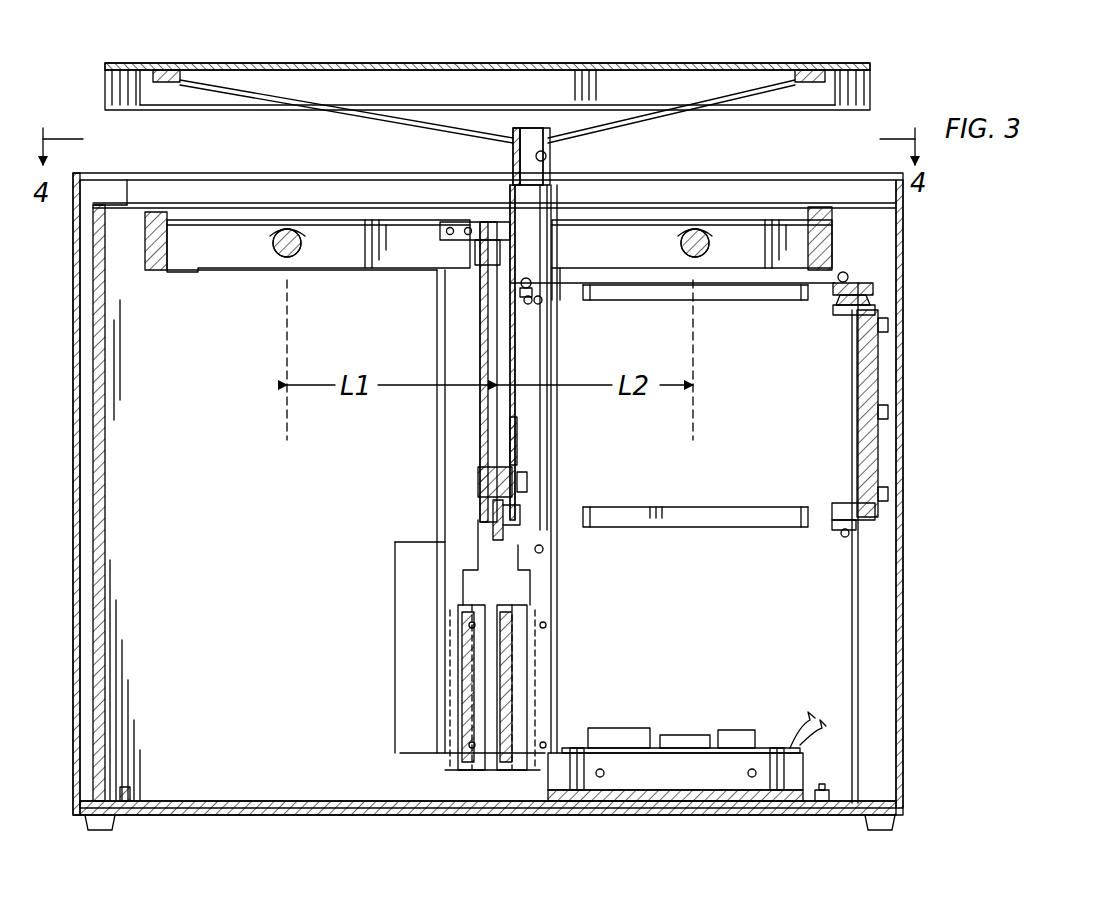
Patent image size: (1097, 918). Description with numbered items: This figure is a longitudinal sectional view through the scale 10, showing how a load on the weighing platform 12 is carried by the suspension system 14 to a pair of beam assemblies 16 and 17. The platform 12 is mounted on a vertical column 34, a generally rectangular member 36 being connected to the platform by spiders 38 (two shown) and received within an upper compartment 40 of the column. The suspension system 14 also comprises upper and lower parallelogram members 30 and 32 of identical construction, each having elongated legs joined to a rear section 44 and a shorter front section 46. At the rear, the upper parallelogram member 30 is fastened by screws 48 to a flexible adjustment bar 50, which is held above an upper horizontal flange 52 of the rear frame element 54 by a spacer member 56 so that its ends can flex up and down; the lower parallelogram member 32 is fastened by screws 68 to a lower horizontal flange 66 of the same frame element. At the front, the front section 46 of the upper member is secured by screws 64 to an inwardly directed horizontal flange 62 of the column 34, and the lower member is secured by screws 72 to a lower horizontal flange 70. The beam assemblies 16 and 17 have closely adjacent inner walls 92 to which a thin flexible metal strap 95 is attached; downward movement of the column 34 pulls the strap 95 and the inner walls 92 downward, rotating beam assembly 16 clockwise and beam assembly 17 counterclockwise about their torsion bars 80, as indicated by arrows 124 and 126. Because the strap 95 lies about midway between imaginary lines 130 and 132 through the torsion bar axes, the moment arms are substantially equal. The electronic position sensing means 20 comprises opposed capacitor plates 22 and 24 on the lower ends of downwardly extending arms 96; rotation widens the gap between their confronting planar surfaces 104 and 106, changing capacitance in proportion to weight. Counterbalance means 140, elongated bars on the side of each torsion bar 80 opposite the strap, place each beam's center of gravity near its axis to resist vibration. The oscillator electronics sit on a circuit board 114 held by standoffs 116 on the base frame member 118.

The scale 10 is at (962, 305).
The weighing platform 12 is at (872, 80).
The suspension system 14 is at (520, 425).
The beam assembly 16 is at (226, 218).
The beam assembly 17 is at (806, 218).
The electronic position sensing means 20 is at (487, 768).
The capacitor plate 22 is at (468, 607).
The capacitor plate 24 is at (505, 607).
The upper parallelogram member 30 is at (762, 300).
The lower parallelogram member 32 is at (700, 506).
The vertical column 34 is at (518, 447).
The rectangular member 36 is at (522, 145).
The spider 38 is at (550, 135).
The upper compartment 40 is at (547, 158).
The rear section 44 is at (850, 283).
The front section 46 is at (530, 295).
The screw 48 is at (846, 272).
The flexible adjustment bar 50 is at (875, 288).
The upper horizontal flange 52 is at (838, 308).
The rear frame element 54 is at (880, 372).
The spacer member 56 is at (872, 302).
The horizontal flange 62 is at (540, 302).
The screw 64 is at (528, 283).
The lower horizontal flange 66 is at (840, 503).
The screw 68 is at (843, 535).
The lower horizontal flange 70 is at (520, 505).
The screw 72 is at (478, 550).
The torsion bar 80 is at (273, 243).
The inner wall 92 is at (490, 222).
The flexible metal strap 95 is at (488, 345).
The downwardly extending arm 96 is at (522, 395).
The confronting planar surface 104 is at (470, 680).
The confronting planar surface 106 is at (500, 650).
The circuit board 114 is at (660, 748).
The standoff 116 is at (578, 748).
The base frame member 118 is at (696, 795).
The arrow 124 is at (290, 232).
The arrow 126 is at (688, 232).
The imaginary line 130 is at (287, 350).
The imaginary line 132 is at (693, 430).
The counterbalance means 140 is at (160, 265).